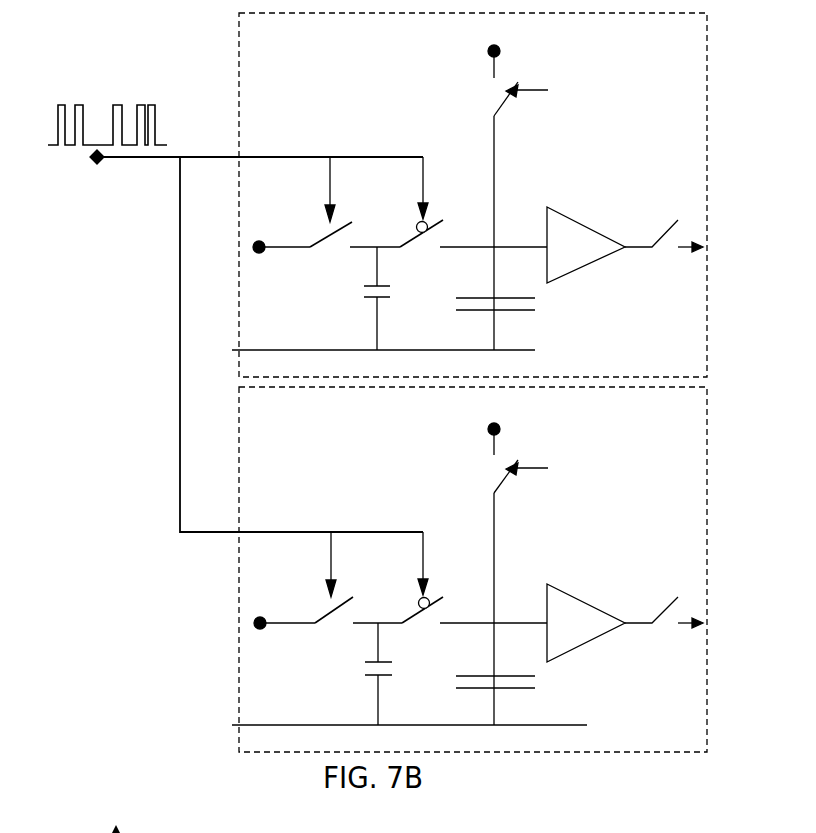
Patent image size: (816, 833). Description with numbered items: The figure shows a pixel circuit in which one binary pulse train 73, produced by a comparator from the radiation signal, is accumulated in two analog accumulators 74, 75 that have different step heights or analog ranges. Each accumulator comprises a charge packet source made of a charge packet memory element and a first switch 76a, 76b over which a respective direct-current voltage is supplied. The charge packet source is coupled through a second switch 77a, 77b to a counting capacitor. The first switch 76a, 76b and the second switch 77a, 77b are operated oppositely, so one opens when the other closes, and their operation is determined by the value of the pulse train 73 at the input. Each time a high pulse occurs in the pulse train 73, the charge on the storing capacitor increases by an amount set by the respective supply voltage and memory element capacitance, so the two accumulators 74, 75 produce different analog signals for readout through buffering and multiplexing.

The pulse train 73 is at (184, 123).
The analog accumulator 74 is at (480, 195).
The analog accumulator 75 is at (480, 569).
The first switch 76a is at (330, 237).
The second switch 77a is at (418, 233).
The first switch 76b is at (327, 607).
The second switch 77b is at (412, 610).